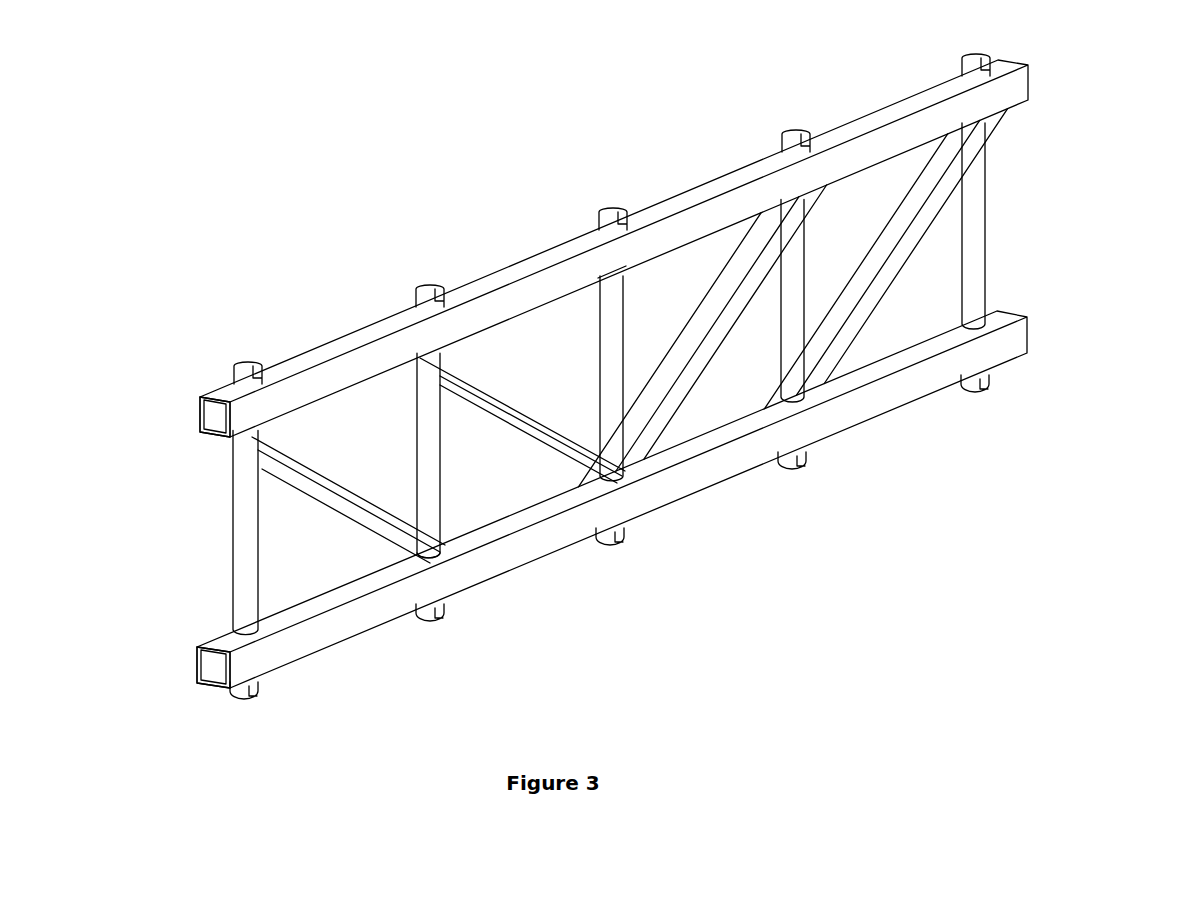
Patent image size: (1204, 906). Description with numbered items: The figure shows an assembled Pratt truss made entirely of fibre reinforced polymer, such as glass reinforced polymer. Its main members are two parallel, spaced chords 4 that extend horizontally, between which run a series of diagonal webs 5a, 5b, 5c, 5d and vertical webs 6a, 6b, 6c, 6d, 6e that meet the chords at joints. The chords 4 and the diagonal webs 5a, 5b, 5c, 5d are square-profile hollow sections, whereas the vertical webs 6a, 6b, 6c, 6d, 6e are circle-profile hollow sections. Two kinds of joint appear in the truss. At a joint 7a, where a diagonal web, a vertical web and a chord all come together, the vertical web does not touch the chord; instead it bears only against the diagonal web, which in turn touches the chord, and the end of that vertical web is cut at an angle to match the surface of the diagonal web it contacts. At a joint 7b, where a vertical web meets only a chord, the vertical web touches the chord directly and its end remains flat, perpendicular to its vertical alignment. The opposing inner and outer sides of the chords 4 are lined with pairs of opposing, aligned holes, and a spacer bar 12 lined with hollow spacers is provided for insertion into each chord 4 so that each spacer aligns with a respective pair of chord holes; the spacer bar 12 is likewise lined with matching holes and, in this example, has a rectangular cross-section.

The chords 4 is at (1017, 87).
The spacer bar 12 is at (205, 650).
The diagonal web 5a is at (312, 470).
The diagonal web 5b is at (497, 393).
The diagonal web 5c is at (713, 313).
The diagonal web 5d is at (895, 233).
The vertical web 6a is at (247, 563).
The vertical web 6b is at (428, 485).
The vertical web 6c is at (617, 430).
The vertical web 6d is at (792, 353).
The vertical web 6e is at (972, 267).
The joint 7a is at (430, 553).
The joint 7b is at (613, 258).